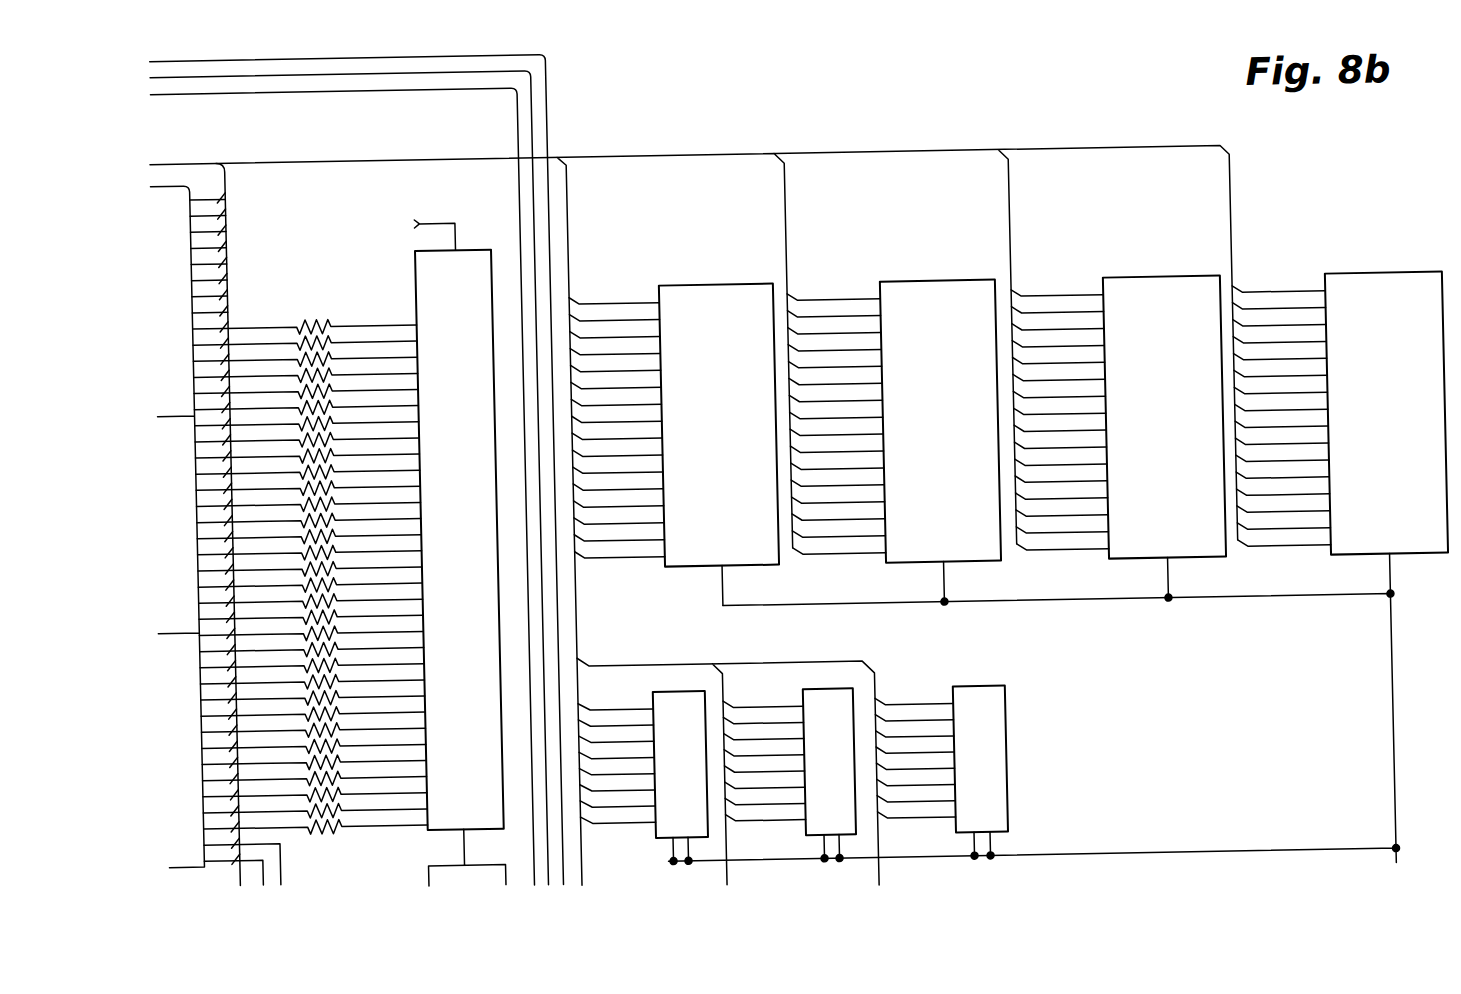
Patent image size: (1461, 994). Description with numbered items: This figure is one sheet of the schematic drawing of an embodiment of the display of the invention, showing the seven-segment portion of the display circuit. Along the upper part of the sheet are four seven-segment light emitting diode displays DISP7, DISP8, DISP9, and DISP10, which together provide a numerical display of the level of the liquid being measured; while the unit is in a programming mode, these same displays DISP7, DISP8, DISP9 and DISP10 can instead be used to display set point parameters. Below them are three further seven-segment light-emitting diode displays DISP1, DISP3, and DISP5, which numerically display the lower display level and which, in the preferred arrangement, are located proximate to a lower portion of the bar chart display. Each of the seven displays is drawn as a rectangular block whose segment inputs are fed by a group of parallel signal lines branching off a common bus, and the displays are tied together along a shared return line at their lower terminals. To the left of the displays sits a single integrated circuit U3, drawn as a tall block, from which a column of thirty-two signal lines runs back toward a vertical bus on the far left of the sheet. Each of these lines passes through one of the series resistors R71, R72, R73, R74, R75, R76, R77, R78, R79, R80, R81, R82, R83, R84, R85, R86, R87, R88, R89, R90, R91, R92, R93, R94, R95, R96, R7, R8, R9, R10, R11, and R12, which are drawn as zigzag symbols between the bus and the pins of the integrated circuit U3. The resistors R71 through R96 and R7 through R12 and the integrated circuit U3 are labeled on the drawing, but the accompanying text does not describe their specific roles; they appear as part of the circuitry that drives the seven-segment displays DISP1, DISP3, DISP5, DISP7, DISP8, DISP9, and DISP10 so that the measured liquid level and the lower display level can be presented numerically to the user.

The resistor R71 is at (304, 324).
The resistor R72 is at (305, 340).
The resistor R73 is at (305, 356).
The resistor R74 is at (305, 372).
The resistor R75 is at (306, 388).
The resistor R76 is at (306, 404).
The resistor R77 is at (306, 420).
The resistor R78 is at (307, 436).
The resistor R79 is at (307, 453).
The resistor R80 is at (308, 469).
The resistor R81 is at (308, 485).
The resistor R82 is at (308, 501).
The resistor R83 is at (309, 517).
The resistor R84 is at (309, 533).
The resistor R85 is at (309, 549).
The resistor R86 is at (310, 566).
The resistor R87 is at (310, 582).
The resistor R88 is at (310, 598).
The resistor R89 is at (311, 614).
The resistor R90 is at (311, 630).
The resistor R91 is at (311, 646).
The resistor R92 is at (312, 662).
The resistor R93 is at (312, 678).
The resistor R94 is at (312, 695).
The resistor R95 is at (313, 711).
The resistor R96 is at (313, 727).
The resistor R7 is at (314, 743).
The resistor R8 is at (314, 759).
The resistor R9 is at (314, 775).
The resistor R10 is at (315, 791).
The resistor R11 is at (315, 807).
The resistor R12 is at (315, 824).
The integrated circuit U3 (display driver) U3 is at (460, 552).
The seven-segment light emitting diode display DISP7 is at (674, 446).
The seven-segment light emitting diode display DISP8 is at (894, 444).
The seven-segment light emitting diode display DISP9 is at (1119, 440).
The seven-segment light emitting diode display DISP10 is at (1340, 436).
The seven-segment light-emitting diode display DISP1 is at (643, 778).
The seven-segment light-emitting diode display DISP3 is at (790, 775).
The seven-segment light-emitting diode display DISP5 is at (942, 773).